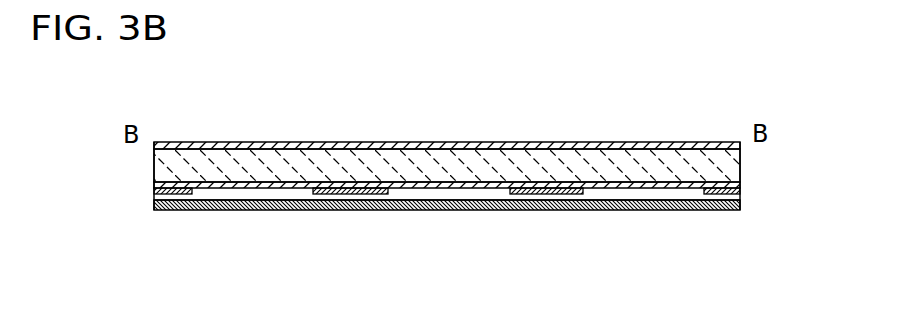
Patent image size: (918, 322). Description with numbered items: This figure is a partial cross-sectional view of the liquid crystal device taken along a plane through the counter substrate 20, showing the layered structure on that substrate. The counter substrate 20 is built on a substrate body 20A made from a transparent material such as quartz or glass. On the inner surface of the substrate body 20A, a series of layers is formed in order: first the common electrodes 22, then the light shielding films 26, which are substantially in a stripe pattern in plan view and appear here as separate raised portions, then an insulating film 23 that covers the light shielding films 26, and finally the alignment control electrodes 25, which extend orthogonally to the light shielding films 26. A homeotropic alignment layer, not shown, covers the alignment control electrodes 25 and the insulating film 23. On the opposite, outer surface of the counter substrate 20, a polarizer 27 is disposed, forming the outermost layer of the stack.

The counter substrate 20 is at (136, 167).
The substrate body 20A is at (735, 165).
The common electrodes 22 is at (740, 183).
The insulating film 23 is at (446, 196).
The alignment control electrodes 25 is at (740, 206).
The light shielding films 26 is at (362, 194).
The polarizer 27 is at (698, 142).